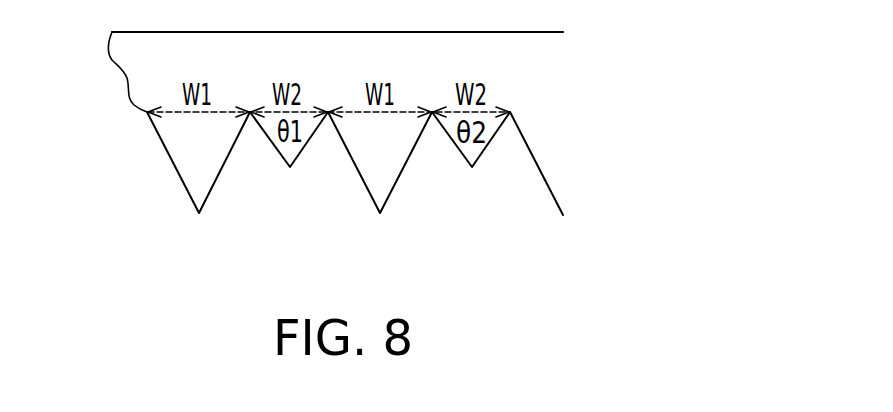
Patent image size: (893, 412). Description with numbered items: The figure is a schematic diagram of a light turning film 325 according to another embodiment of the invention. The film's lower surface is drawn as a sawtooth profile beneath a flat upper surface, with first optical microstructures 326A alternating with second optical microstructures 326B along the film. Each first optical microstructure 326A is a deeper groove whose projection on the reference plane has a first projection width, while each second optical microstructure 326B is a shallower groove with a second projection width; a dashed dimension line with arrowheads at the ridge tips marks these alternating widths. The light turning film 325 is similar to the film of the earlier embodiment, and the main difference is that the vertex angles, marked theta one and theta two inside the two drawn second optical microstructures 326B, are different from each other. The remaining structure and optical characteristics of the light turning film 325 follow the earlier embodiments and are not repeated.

The light turning film 325 is at (143, 63).
The first optical microstructures 326A is at (172, 163).
The second optical microstructures 326B is at (297, 158).